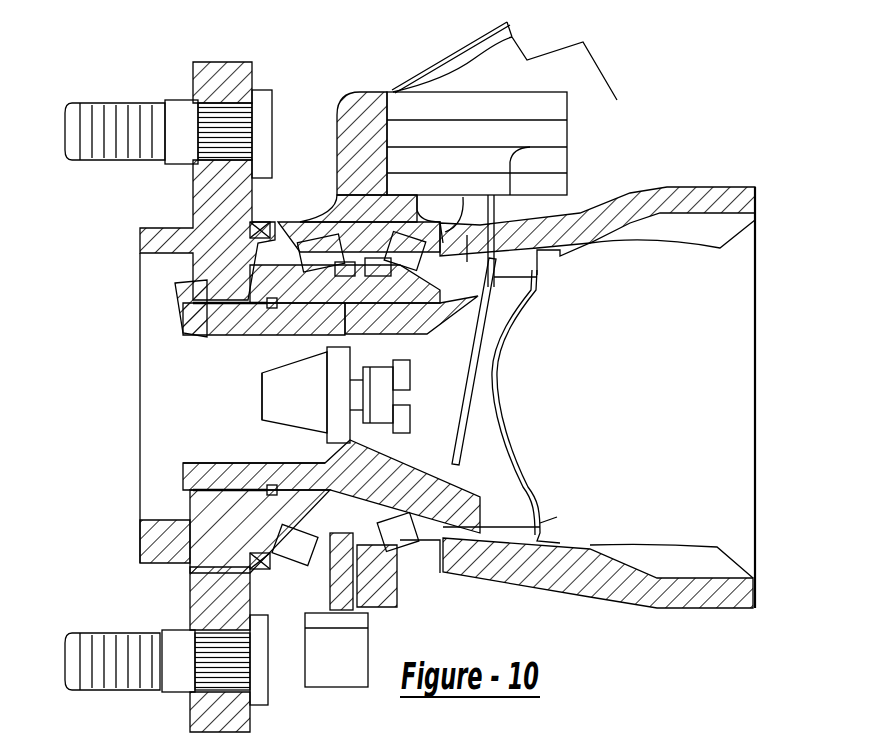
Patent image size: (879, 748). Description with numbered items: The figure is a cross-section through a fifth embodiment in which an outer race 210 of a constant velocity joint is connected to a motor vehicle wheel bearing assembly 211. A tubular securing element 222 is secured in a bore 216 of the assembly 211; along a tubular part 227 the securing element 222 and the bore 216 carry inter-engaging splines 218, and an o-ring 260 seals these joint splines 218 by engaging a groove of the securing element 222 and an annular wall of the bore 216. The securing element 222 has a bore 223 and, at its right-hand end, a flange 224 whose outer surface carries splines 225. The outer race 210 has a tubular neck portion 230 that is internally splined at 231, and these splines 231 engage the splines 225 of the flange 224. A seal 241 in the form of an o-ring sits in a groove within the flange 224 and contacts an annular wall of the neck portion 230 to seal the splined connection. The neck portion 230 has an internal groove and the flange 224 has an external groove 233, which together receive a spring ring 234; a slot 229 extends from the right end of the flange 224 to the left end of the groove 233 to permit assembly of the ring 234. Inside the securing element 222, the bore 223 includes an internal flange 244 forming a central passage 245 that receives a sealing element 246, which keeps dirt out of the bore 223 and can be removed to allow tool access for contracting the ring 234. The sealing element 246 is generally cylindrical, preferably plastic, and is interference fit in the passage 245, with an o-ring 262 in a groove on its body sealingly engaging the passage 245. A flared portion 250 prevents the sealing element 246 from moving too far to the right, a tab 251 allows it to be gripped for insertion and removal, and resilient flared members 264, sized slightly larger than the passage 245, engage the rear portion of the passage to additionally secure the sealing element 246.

The outer race 210 is at (670, 600).
The motor vehicle wheel bearing assembly 211 is at (213, 180).
The bore 216 is at (207, 570).
The inter-engaging splines 218 is at (180, 527).
The tubular securing element 222 is at (187, 317).
The bore 223 is at (207, 335).
The flange 224 is at (497, 297).
The splines 225 is at (513, 478).
The tubular part 227 is at (150, 287).
The slot 229 is at (560, 267).
The tubular neck portion 230 is at (567, 147).
The splines 231 is at (493, 547).
The external groove 233 is at (540, 523).
The spring ring 234 is at (500, 318).
The seal 241 is at (467, 235).
The internal flange 244 is at (403, 340).
The central passage 245 is at (413, 375).
The sealing element 246 is at (273, 422).
The flared portion 250 is at (187, 463).
The tab 251 is at (260, 393).
The o-ring 260 is at (183, 295).
The o-ring 262 is at (340, 330).
The resilient flared members 264 is at (405, 424).